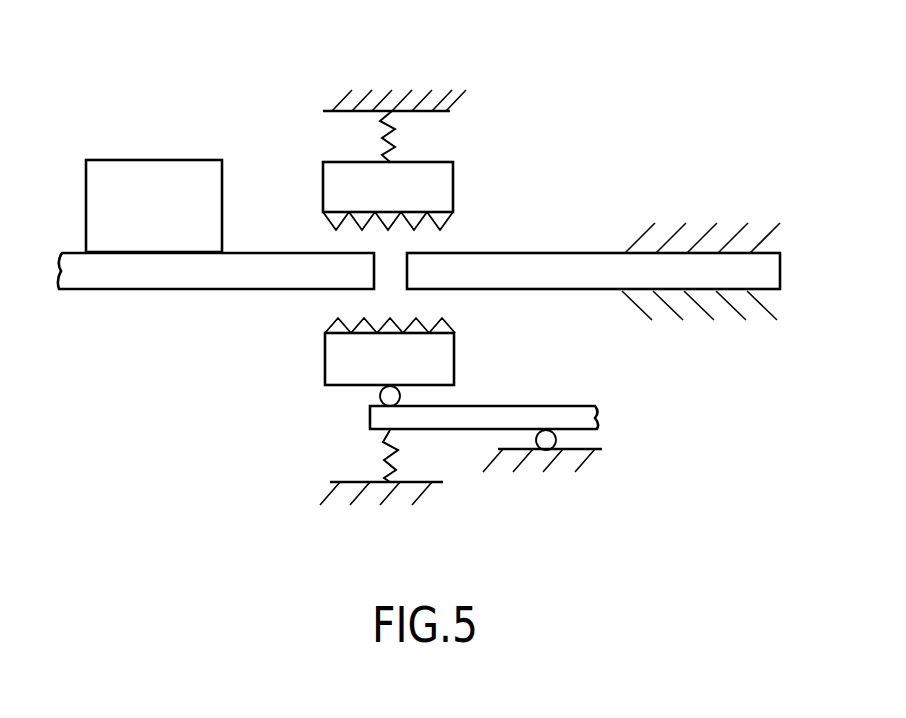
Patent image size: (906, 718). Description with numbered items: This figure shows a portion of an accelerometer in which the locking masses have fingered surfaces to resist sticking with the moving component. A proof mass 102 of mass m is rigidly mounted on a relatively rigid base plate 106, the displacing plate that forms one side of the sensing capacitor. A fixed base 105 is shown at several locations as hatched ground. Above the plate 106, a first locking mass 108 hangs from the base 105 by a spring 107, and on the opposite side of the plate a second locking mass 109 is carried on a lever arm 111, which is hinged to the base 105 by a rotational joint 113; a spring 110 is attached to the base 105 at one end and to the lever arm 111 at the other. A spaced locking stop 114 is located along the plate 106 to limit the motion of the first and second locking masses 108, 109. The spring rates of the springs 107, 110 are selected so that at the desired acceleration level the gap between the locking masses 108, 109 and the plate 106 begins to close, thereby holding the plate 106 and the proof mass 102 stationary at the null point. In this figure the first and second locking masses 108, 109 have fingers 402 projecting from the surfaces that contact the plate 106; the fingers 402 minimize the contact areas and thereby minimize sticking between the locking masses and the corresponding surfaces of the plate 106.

The proof mass 102 is at (138, 160).
The base 105 is at (323, 111).
The base plate 106 is at (175, 290).
The spring 107 is at (392, 143).
The first locking mass 108 is at (453, 193).
The second locking mass 109 is at (457, 357).
The spring 110 is at (387, 445).
The lever arm 111 is at (568, 406).
The rotational joint 113 is at (555, 440).
The locking stop 114 is at (620, 253).
The fingers 402 is at (445, 228).